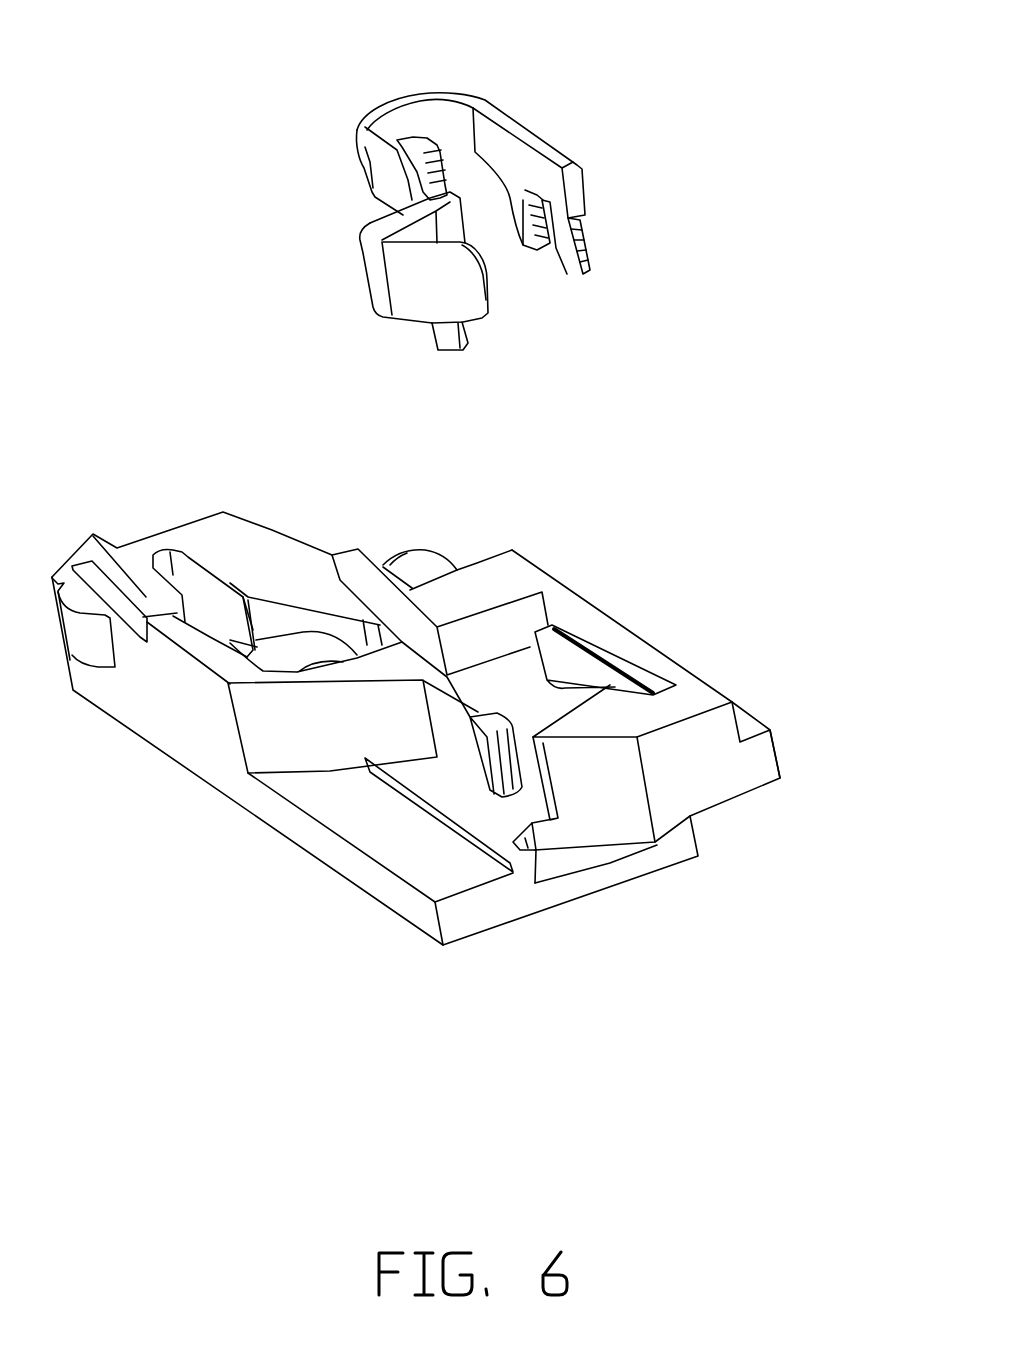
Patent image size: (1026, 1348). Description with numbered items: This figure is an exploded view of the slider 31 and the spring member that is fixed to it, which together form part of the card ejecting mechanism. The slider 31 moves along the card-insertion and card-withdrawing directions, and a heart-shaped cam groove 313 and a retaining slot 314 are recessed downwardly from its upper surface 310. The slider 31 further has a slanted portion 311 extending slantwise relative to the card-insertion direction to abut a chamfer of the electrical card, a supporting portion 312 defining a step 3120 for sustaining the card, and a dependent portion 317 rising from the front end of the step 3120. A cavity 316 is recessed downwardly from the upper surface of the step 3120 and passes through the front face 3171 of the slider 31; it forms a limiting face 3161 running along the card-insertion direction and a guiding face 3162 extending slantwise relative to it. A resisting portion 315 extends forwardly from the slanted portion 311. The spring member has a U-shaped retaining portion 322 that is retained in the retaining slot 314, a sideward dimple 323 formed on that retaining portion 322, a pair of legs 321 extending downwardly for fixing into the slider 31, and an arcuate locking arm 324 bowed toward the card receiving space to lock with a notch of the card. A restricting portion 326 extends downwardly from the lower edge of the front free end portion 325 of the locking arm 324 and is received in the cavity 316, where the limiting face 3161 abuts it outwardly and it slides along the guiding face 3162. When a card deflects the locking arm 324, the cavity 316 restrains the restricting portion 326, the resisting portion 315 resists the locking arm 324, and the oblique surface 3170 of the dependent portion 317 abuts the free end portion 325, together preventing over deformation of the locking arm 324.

The slider 31 is at (288, 548).
The upper surface 310 is at (477, 586).
The slanted portion 311 is at (263, 732).
The supporting portion 312 is at (405, 830).
The step 3120 is at (508, 822).
The heart-shaped cam groove 313 is at (333, 625).
The retaining slot 314 is at (606, 651).
The resisting portion 315 is at (462, 747).
The cavity 316 is at (577, 857).
The limiting face 3161 is at (520, 850).
The guiding face 3162 is at (532, 848).
The dependent portion 317 is at (613, 727).
The oblique surface 3170 is at (613, 792).
The front face 3171 is at (727, 768).
The legs 321 is at (562, 253).
The retaining portion 322 is at (400, 96).
The sideward dimple 323 is at (420, 137).
The locking arm 324 is at (375, 279).
The free end portion 325 is at (432, 288).
The restricting portion 326 is at (447, 340).